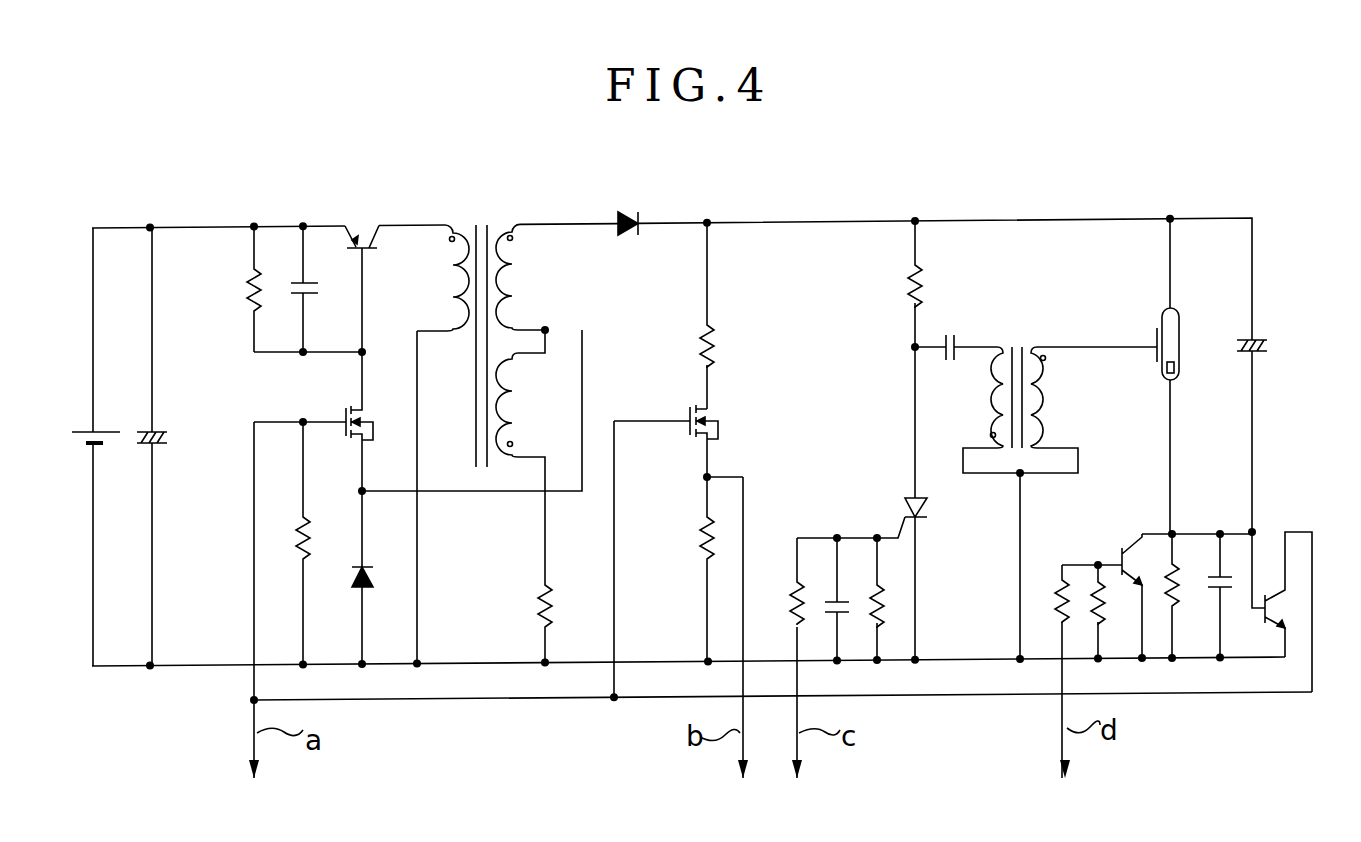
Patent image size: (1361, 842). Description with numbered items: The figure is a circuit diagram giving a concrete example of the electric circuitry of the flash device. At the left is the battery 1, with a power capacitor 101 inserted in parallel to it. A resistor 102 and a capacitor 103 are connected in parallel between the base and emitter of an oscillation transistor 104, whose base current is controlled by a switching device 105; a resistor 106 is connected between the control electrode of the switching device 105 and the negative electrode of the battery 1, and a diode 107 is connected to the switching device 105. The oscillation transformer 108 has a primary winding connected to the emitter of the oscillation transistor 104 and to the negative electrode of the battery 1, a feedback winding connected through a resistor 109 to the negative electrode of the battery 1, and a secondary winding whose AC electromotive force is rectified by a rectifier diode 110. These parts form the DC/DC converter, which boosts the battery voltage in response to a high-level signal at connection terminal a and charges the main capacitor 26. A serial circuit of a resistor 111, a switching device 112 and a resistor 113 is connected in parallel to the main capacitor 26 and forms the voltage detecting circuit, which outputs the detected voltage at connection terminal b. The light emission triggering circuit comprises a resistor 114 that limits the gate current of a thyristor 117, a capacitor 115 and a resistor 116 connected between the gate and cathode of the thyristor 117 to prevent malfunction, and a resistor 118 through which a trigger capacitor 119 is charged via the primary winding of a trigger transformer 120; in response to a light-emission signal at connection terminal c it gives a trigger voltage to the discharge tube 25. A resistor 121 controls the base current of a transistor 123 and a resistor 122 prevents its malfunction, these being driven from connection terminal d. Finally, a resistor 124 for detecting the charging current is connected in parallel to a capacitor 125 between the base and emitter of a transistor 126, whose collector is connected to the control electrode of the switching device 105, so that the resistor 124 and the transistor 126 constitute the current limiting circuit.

The battery 1 is at (76, 437).
The power capacitor 101 is at (153, 432).
The resistor 102 is at (250, 290).
The capacitor 103 is at (318, 290).
The oscillation transistor 104 is at (355, 234).
The switching device 105 is at (360, 414).
The resistor 106 is at (305, 535).
The diode 107 is at (369, 566).
The oscillation transformer 108 is at (478, 228).
The resistor 109 is at (541, 606).
The rectifier diode 110 is at (640, 212).
The resistor 111 is at (712, 338).
The switching device 112 is at (716, 415).
The resistor 113 is at (703, 535).
The resistor 114 is at (790, 596).
The capacitor 115 is at (832, 602).
The resistor 116 is at (886, 594).
The thyristor 117 is at (908, 497).
The resistor 118 is at (920, 286).
The trigger capacitor 119 is at (952, 338).
The trigger transformer 120 is at (1020, 345).
The resistor 121 is at (1058, 600).
The resistor 122 is at (1096, 595).
The transistor 123 is at (1145, 565).
The resistor 124 is at (1176, 585).
The capacitor 125 is at (1233, 584).
The transistor 126 is at (1280, 611).
The discharge tube 25 is at (1181, 330).
The main capacitor 26 is at (1265, 338).